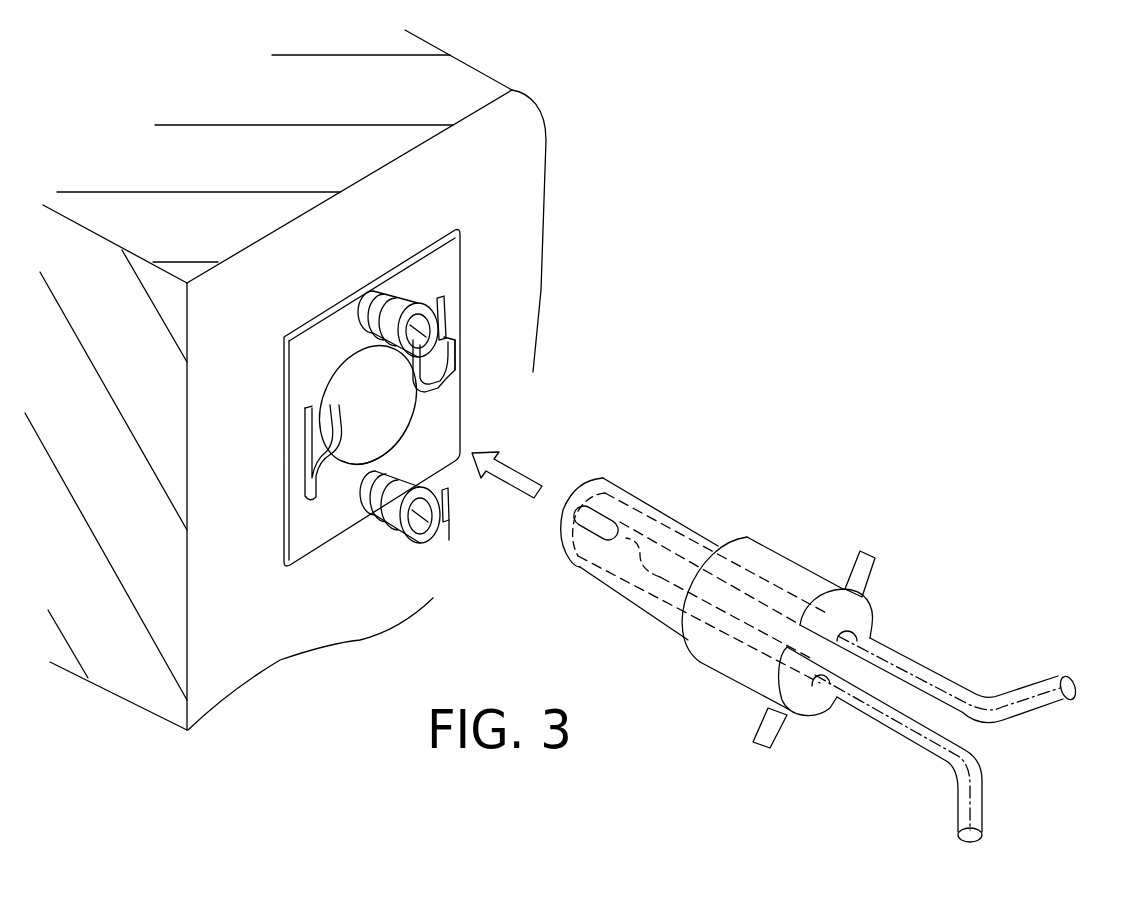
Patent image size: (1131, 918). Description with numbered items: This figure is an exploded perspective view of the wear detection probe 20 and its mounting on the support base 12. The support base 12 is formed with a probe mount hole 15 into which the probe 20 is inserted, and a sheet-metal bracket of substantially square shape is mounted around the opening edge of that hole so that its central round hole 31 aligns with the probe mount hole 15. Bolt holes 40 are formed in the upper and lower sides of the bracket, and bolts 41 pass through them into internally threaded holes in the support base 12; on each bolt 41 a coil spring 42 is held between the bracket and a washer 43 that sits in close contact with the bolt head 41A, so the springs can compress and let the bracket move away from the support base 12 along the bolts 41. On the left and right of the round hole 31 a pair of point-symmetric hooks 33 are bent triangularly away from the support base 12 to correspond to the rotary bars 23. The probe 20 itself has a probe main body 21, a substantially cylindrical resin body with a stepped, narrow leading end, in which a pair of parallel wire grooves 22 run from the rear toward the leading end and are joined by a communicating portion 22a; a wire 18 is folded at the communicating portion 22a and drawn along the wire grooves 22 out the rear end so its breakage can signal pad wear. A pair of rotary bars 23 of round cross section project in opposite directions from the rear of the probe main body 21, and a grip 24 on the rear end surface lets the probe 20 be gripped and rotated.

The support base 12 is at (443, 88).
The bolt hole 40 is at (460, 243).
The probe mount hole 15 is at (357, 357).
The round hole 31 is at (420, 433).
The hook 33 is at (300, 437).
The coil spring 42 is at (395, 292).
The washer 43 is at (432, 308).
The bolt 41 is at (468, 334).
The bolt head 41A is at (467, 330).
The wear detection probe 20 is at (858, 510).
The probe main body 21 is at (793, 557).
The wire groove 22 is at (852, 645).
The communicating portion 22a is at (580, 516).
The rotary bar 23 is at (870, 570).
The grip 24 is at (900, 695).
The wire 18 is at (1027, 717).